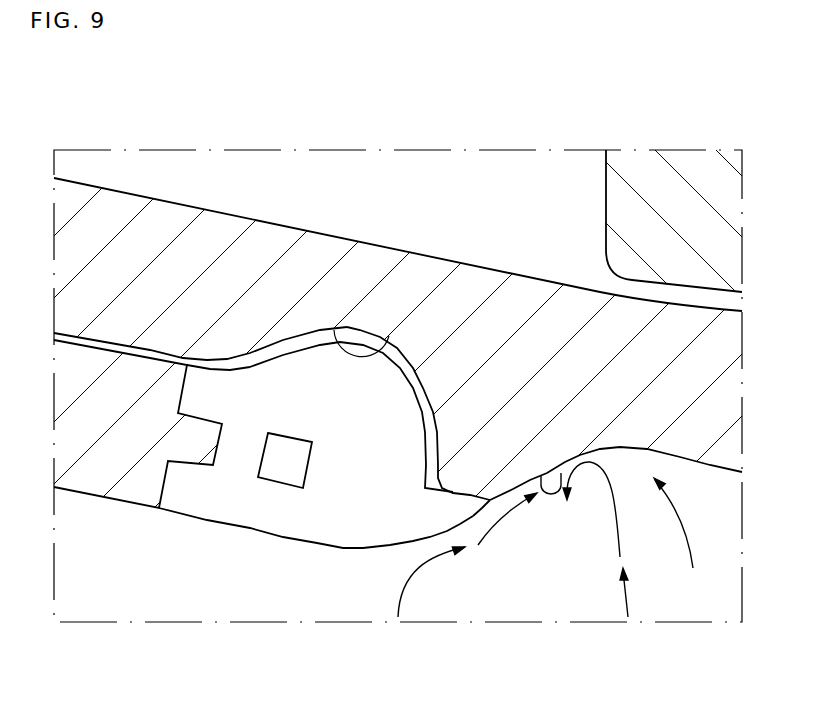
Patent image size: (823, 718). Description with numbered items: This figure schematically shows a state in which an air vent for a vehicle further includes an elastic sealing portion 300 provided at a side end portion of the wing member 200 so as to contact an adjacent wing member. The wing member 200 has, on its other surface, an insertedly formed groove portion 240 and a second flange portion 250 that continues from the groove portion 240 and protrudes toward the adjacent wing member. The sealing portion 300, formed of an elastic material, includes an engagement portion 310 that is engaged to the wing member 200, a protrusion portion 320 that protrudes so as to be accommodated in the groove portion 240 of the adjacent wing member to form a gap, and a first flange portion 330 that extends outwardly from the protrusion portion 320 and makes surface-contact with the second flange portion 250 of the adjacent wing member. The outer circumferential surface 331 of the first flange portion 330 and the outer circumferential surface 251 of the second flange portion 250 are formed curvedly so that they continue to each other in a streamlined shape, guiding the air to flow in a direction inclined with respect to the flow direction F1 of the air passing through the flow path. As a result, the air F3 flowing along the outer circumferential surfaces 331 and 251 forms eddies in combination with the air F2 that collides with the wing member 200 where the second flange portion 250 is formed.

The wing member 200 is at (123, 453).
The groove portion 240 is at (334, 330).
The second flange portion 250 is at (478, 493).
The outer circumferential surface 251 is at (561, 472).
The sealing portion 300 is at (344, 516).
The engagement portion 310 is at (187, 490).
The protrusion portion 320 is at (392, 362).
The first flange portion 330 is at (449, 510).
The outer circumferential surface 331 is at (497, 505).
The flow direction F1 is at (628, 592).
The air colliding with the wing member F2 is at (590, 470).
The air flowing along the outer circumferential surfaces F3 is at (508, 510).